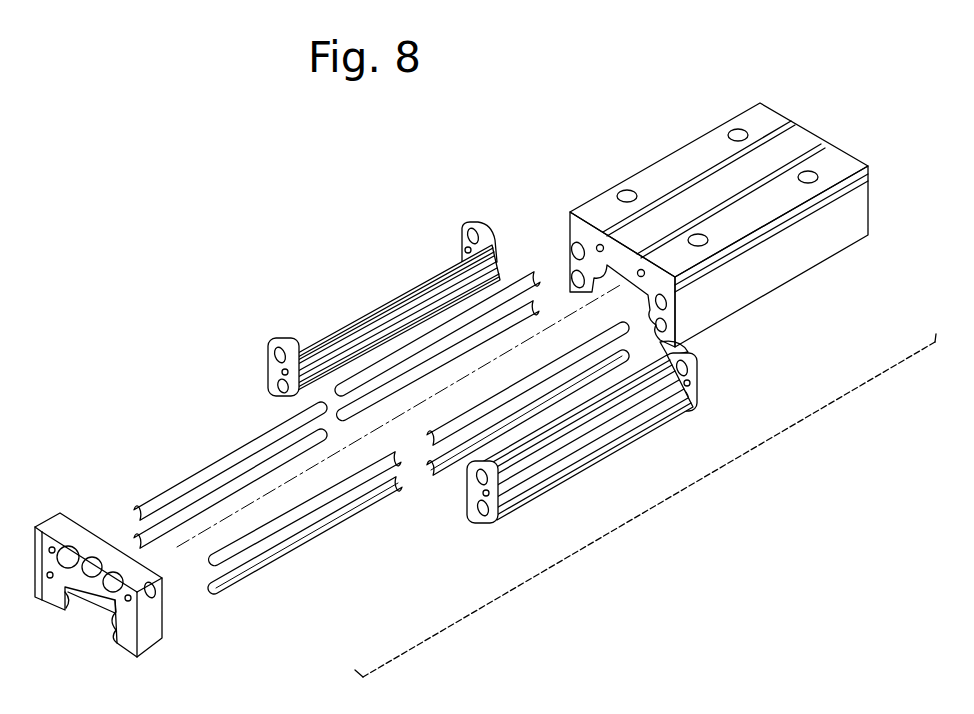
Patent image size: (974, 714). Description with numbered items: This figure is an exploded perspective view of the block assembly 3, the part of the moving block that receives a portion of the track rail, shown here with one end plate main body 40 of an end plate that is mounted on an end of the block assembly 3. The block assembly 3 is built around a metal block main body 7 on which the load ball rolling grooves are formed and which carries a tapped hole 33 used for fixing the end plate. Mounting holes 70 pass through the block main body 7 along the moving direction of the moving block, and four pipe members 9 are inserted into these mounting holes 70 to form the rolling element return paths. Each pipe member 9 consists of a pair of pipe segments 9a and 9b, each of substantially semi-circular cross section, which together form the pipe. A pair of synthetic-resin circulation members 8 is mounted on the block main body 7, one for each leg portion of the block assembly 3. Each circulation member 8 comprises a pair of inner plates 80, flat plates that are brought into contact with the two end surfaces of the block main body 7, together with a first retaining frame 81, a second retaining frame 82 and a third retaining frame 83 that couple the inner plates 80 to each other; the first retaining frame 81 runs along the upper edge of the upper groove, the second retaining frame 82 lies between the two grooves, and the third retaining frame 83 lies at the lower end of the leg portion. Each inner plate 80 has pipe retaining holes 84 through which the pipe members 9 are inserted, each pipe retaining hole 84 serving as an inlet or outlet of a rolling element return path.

The block assembly 3 is at (628, 529).
The block main body 7 is at (798, 150).
The circulation member 8 is at (374, 306).
The pipe member 9 is at (447, 525).
The pipe segment 9a is at (507, 323).
The pipe segment 9b is at (236, 462).
The tapped hole 33 is at (639, 277).
The end plate main body 40 is at (150, 640).
The mounting hole 70 is at (670, 314).
The inner plate 80 is at (698, 392).
The first retaining frame 81 is at (618, 392).
The second retaining frame 82 is at (588, 425).
The third retaining frame 83 is at (520, 498).
The pipe retaining hole 84 is at (484, 524).